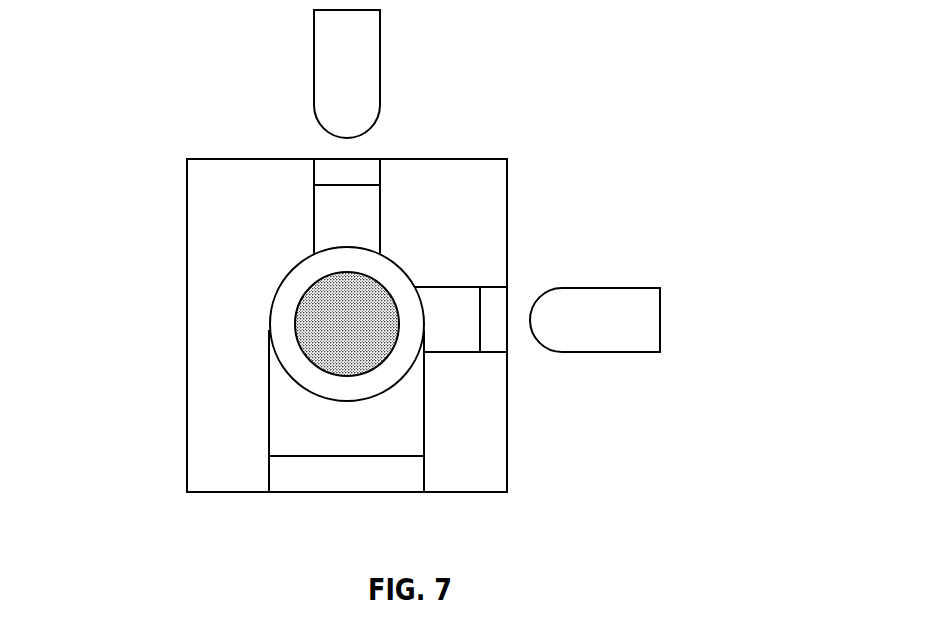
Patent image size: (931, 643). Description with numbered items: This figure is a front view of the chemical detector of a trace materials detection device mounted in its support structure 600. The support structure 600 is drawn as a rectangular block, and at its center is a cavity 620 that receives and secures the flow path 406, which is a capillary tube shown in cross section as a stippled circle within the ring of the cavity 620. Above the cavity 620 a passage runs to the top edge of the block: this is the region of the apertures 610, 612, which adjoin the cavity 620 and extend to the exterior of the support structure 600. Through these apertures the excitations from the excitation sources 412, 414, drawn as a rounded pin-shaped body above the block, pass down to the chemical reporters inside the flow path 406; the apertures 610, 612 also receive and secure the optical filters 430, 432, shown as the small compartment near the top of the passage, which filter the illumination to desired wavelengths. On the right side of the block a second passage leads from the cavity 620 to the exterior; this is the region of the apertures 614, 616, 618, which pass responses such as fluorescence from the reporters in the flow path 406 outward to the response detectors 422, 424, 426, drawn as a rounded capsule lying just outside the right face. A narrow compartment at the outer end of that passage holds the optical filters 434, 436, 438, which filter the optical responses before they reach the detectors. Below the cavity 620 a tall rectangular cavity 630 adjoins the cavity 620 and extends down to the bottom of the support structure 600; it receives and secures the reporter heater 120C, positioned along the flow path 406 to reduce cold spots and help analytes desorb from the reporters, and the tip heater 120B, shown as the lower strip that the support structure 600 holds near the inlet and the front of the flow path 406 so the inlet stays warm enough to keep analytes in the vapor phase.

The excitation source 412 is at (268, 74).
The excitation source 414 is at (314, 58).
The optical filter 430 is at (410, 188).
The optical filter 432 is at (355, 178).
The support structure 600 is at (221, 187).
The aperture 610 is at (218, 214).
The aperture 612 is at (315, 244).
The cavity 620 is at (297, 270).
The flow path 406 is at (347, 323).
The optical filter 434 is at (611, 300).
The optical filter 436 is at (611, 300).
The optical filter 438 is at (493, 302).
The aperture 614 is at (560, 347).
The aperture 616 is at (560, 347).
The aperture 618 is at (462, 328).
The response detector 422 is at (698, 320).
The response detector 424 is at (698, 320).
The response detector 426 is at (660, 320).
The cavity 630 is at (269, 373).
The reporter heater 120C is at (283, 419).
The tip heater 120B is at (343, 478).